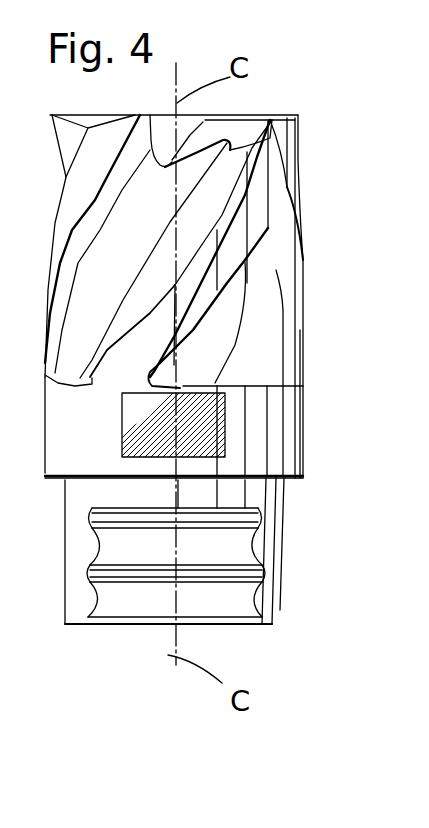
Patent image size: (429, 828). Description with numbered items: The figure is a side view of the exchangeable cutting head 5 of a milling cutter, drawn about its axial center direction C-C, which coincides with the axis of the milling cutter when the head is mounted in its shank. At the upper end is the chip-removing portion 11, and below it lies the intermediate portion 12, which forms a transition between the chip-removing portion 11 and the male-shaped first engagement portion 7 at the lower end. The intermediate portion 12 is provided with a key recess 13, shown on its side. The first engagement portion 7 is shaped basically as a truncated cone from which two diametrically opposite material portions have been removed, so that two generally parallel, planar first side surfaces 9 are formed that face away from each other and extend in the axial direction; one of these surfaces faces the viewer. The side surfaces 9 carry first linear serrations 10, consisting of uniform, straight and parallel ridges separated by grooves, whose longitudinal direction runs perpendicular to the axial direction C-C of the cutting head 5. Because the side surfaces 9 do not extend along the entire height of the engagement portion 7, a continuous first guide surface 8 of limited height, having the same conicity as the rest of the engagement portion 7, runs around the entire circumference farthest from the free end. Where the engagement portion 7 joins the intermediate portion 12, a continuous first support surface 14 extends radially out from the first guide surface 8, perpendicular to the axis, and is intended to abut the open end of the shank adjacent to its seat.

The cutting head 5 is at (313, 430).
The first engagement portion 7 is at (305, 572).
The first guide surface 8 is at (198, 496).
The first side surfaces 9 is at (137, 561).
The first linear serrations 10 is at (233, 545).
The chip-removing portion 11 is at (298, 205).
The intermediate portion 12 is at (282, 413).
The key recess 13 is at (208, 443).
The first support surface 14 is at (297, 478).